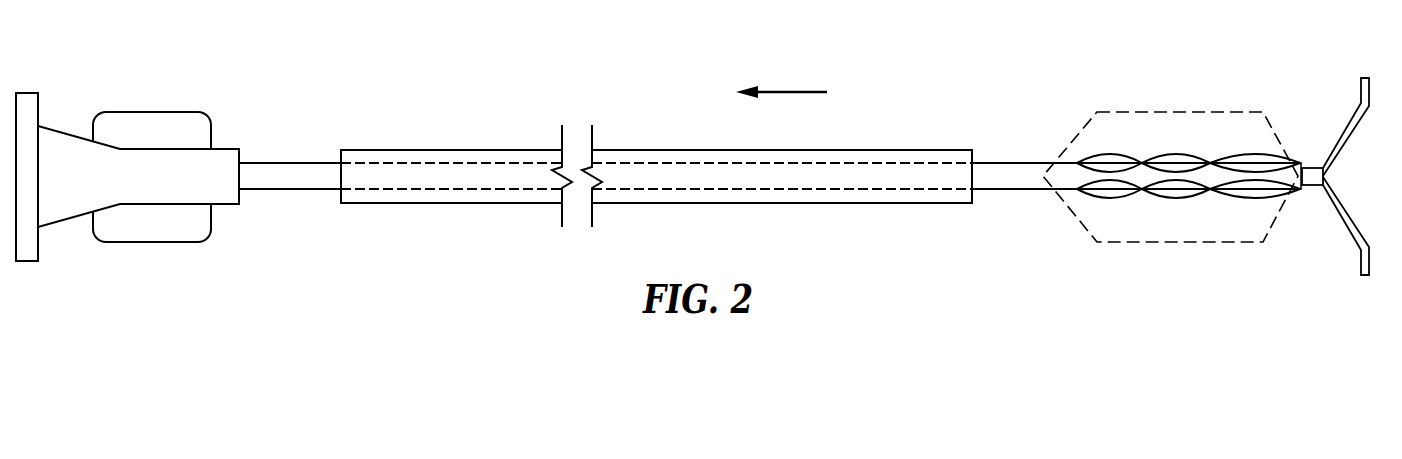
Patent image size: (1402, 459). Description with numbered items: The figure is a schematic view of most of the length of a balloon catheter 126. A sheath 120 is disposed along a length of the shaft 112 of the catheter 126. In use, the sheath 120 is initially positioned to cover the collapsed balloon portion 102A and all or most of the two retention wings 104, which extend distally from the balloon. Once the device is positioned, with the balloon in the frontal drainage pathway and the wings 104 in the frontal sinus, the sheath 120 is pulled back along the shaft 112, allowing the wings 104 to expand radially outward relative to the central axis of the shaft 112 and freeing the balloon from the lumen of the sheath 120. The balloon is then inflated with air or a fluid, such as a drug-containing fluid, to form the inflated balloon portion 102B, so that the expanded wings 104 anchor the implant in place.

The catheter 126 is at (182, 36).
The sheath 120 is at (783, 149).
The shaft 112 is at (1007, 162).
The collapsed balloon portion 102A is at (1177, 200).
The inflated balloon portion 102B is at (1182, 111).
The retention wings 104 is at (1350, 137).